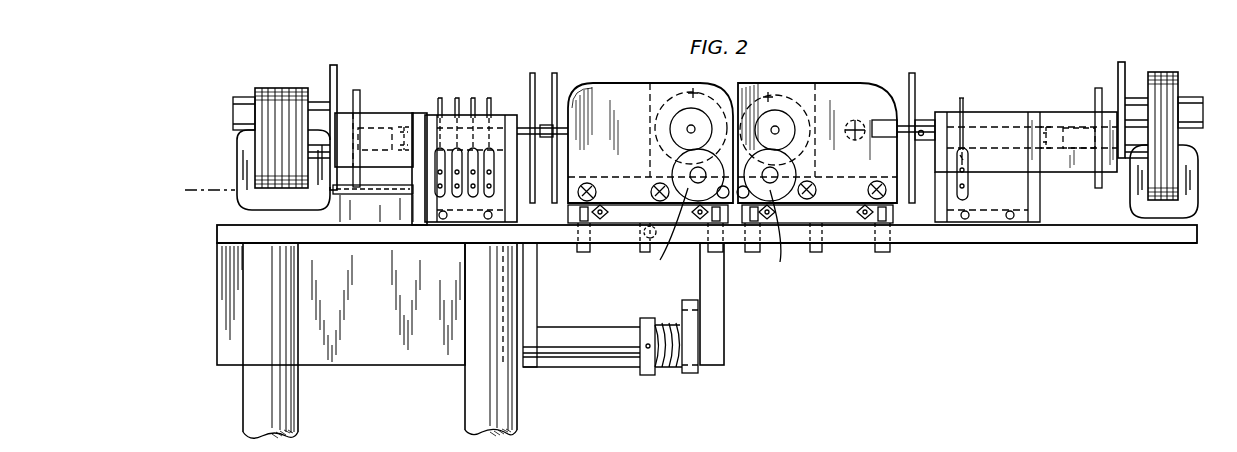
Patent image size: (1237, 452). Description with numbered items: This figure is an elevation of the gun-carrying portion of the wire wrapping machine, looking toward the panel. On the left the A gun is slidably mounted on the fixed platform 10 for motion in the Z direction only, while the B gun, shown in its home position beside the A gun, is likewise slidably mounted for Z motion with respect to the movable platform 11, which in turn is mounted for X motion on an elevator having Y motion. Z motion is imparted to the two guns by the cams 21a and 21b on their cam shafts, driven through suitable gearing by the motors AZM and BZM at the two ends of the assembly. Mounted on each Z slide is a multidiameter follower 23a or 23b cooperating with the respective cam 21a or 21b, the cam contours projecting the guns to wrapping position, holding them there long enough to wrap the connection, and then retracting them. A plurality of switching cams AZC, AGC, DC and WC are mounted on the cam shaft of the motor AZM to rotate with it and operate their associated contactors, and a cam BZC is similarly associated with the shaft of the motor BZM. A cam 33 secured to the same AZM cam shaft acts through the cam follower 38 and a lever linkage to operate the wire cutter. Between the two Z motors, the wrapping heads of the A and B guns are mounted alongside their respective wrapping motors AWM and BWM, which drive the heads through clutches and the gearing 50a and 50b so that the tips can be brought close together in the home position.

The fixed platform 10 is at (219, 230).
The movable platform 11 is at (934, 245).
The A Z motor AZM is at (278, 90).
The switching cam AZC is at (440, 100).
The switching cam AGC is at (457, 100).
The switching cam DC is at (473, 100).
The switching cam WC is at (489, 100).
The cam 33 is at (530, 98).
The cam follower 38 is at (530, 123).
The multidiameter follower 23a is at (547, 124).
The cam 21a is at (557, 80).
The A wrapping motor AWM is at (694, 92).
The B wrapping motor BWM is at (766, 95).
The multidiameter follower 23b is at (910, 92).
The cam 21b is at (914, 75).
The switching cam BZC is at (960, 100).
The B Z motor BZM is at (1163, 72).
The gearing 50a is at (659, 236).
The gearing 50b is at (777, 238).